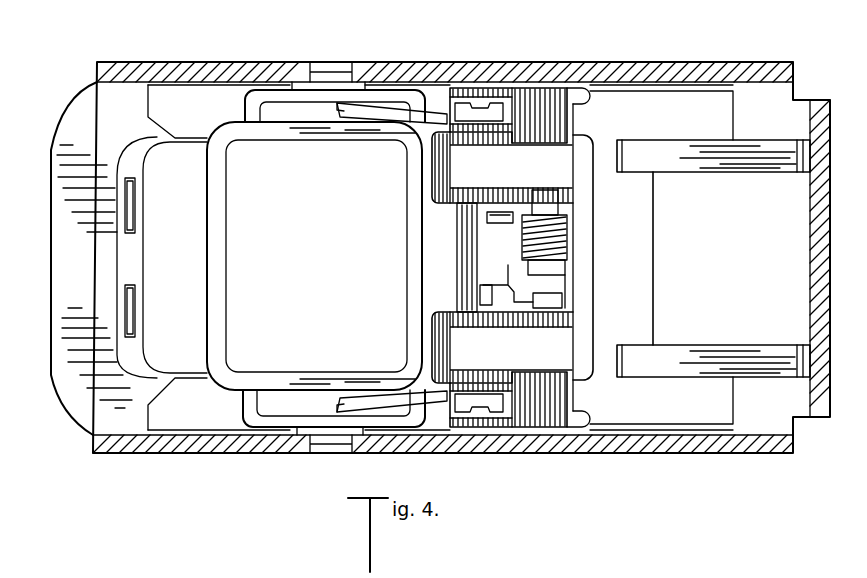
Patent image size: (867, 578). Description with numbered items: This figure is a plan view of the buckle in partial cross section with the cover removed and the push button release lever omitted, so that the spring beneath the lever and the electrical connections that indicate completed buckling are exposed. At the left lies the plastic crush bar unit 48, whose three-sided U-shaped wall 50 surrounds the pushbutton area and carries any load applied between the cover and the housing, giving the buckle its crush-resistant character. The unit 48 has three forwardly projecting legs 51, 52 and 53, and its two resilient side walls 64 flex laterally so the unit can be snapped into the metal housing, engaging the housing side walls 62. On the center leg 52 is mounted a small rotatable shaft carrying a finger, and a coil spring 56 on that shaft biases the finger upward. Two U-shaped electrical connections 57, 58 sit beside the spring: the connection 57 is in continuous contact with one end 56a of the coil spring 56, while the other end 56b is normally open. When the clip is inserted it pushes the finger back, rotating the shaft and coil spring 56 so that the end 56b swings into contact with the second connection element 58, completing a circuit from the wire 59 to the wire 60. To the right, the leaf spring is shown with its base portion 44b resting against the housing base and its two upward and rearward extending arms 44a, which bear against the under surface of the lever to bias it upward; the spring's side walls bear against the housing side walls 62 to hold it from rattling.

The arms 44a is at (703, 163).
The base portion 44b is at (653, 268).
The plastic crush bar unit 48 is at (103, 264).
The three-sided U-shaped wall 50 is at (223, 192).
The forwardly projecting leg 51 is at (530, 95).
The center leg 52 is at (572, 325).
The forwardly projecting leg 53 is at (540, 413).
The coil spring 56 is at (560, 223).
The end of coil spring 56a is at (505, 212).
The other end of coil spring 56b is at (508, 300).
The U-shaped electrical connection 57 is at (430, 176).
The second connection element 58 is at (430, 330).
The wire 59 is at (363, 117).
The wire 60 is at (365, 403).
The housing side walls 62 is at (401, 68).
The resilient side walls 64 is at (279, 102).